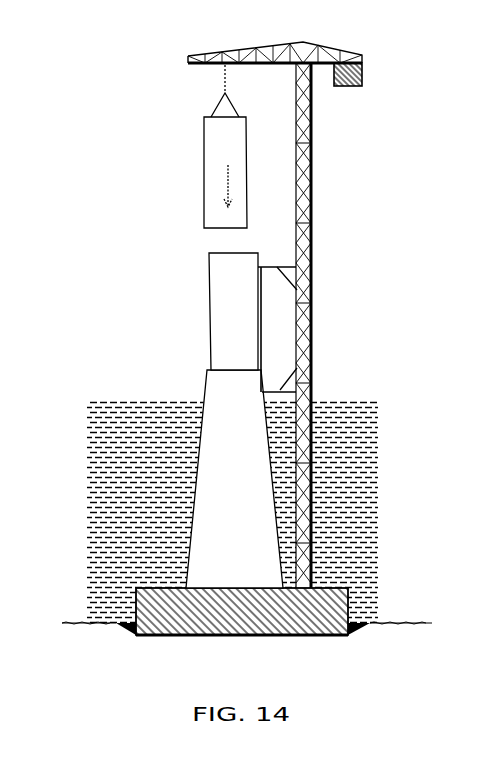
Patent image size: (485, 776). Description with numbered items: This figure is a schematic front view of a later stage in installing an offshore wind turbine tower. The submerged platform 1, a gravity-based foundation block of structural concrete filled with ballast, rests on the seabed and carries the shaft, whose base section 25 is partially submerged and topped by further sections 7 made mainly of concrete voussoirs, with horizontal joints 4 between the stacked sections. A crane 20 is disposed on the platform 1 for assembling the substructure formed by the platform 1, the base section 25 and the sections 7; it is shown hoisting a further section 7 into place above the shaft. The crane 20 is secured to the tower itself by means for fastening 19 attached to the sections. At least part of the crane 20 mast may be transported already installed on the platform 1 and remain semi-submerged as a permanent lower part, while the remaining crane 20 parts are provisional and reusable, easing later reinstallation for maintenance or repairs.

The submerged platform 1 is at (165, 606).
The horizontal joints 4 is at (220, 370).
The sections 7 is at (208, 283).
The means for fastening 19 is at (301, 374).
The crane 20 is at (314, 218).
The base section 25 is at (200, 472).